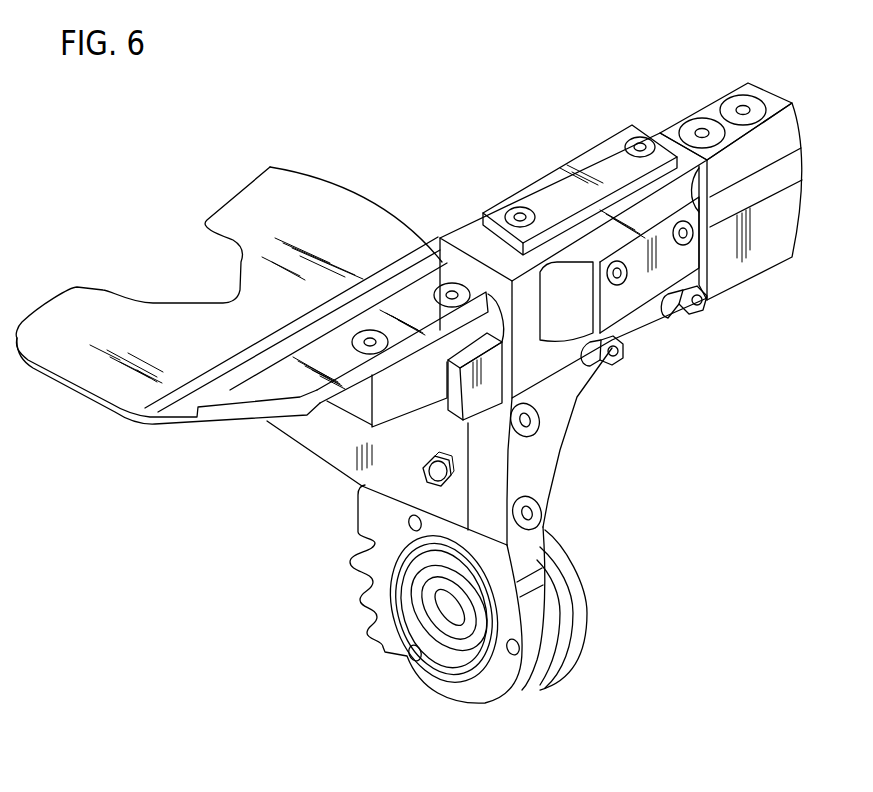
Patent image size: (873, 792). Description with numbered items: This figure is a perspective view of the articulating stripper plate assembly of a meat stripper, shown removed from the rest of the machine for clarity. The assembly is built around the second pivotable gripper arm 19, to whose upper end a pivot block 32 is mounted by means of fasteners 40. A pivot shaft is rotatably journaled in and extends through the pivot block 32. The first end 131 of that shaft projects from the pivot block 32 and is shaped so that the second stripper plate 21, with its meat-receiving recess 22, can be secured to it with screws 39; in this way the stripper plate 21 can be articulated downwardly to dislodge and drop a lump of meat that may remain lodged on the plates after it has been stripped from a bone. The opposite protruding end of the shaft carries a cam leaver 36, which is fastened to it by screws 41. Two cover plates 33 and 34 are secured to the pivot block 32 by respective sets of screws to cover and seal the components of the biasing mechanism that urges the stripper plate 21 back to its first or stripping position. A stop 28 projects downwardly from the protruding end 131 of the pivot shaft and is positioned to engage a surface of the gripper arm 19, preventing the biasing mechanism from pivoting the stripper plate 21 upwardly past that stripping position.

The second pivotable gripper arm 19 is at (555, 470).
The second stripper plate 21 is at (322, 205).
The recess 22 is at (240, 270).
The stop 28 is at (492, 384).
The pivot block 32 is at (463, 240).
The cover plate 33 is at (535, 190).
The cover plate 34 is at (640, 290).
The cam leaver 36 is at (765, 255).
The screws 39 is at (370, 342).
The fasteners 40 is at (700, 310).
The screws 41 is at (743, 110).
The first end of the pivot shaft 131 is at (390, 407).